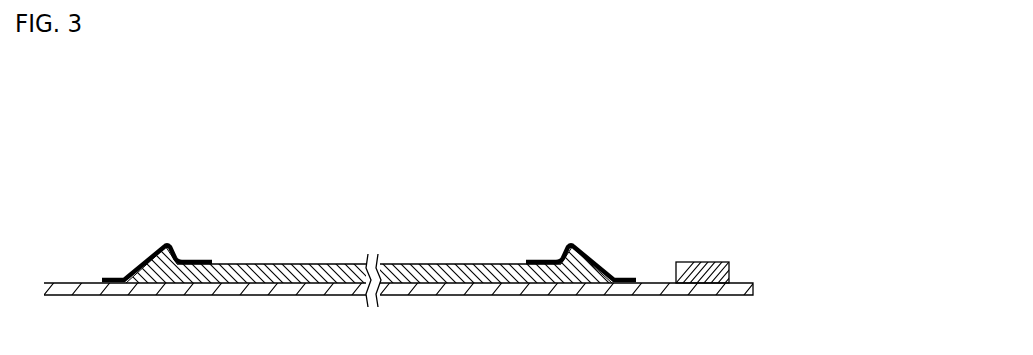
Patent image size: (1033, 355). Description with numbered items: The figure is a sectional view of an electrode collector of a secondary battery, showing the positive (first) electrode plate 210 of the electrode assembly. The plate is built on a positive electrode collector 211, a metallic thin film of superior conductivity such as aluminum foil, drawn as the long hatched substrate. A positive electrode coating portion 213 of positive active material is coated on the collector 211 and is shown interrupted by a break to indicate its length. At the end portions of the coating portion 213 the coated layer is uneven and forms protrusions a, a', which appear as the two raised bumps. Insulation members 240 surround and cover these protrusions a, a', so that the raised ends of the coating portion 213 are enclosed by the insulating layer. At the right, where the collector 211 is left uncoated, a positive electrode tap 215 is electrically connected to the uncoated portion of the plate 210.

The first electrode plate 210 is at (688, 170).
The positive electrode collector 211 is at (753, 290).
The positive electrode coating portion 213 is at (455, 262).
The positive electrode tap 215 is at (700, 261).
The insulation member 240 is at (180, 250).
The protrusion a is at (597, 213).
The protrusion a' is at (139, 212).